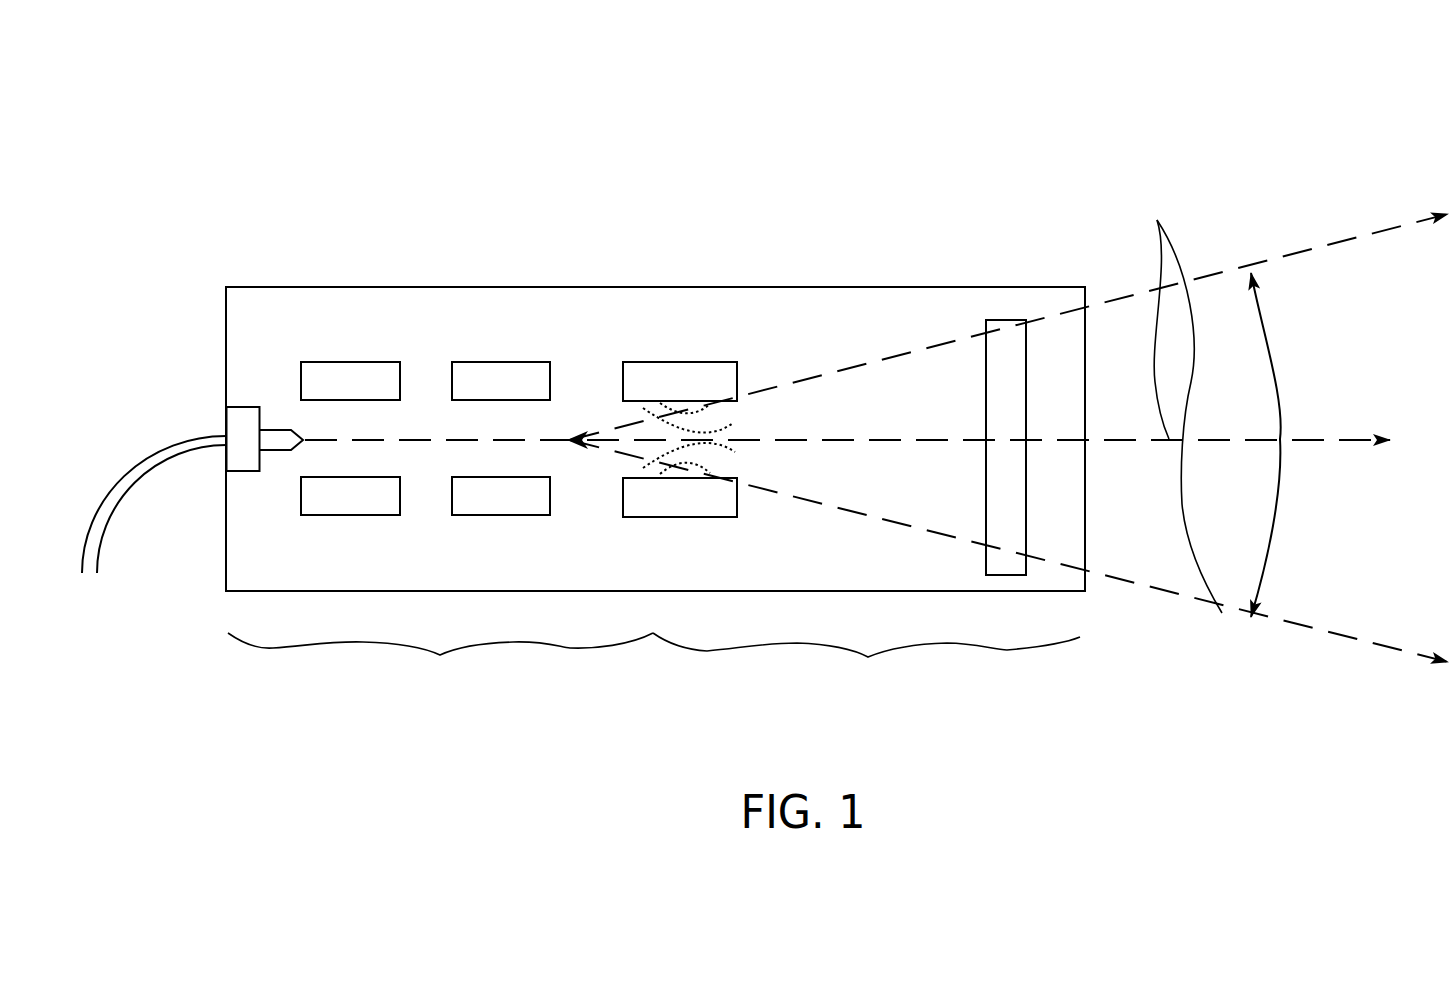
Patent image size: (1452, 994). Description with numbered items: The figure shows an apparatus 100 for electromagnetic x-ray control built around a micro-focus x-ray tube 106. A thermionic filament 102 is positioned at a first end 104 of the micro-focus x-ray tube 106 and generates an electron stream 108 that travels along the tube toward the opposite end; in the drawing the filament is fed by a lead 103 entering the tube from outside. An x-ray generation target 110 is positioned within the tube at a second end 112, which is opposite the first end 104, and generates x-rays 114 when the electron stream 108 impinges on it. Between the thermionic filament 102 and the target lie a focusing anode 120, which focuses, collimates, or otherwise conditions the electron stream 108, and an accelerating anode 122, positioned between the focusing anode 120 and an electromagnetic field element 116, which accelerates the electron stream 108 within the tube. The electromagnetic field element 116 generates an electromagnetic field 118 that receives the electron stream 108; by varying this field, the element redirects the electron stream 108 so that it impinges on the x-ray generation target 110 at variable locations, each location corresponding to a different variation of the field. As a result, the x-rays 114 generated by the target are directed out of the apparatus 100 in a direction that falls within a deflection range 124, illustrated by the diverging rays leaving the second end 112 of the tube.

The apparatus 100 is at (285, 95).
The thermionic filament 102 is at (280, 430).
The optical fiber input 103 is at (242, 407).
The first end 104 is at (440, 660).
The micro-focus x-ray tube 106 is at (578, 287).
The electron stream 108 is at (425, 437).
The x-ray generation target 110 is at (993, 320).
The second end 112 is at (866, 662).
The x-rays 114 is at (1135, 289).
The electromagnetic field element 116 is at (677, 362).
The electromagnetic field 118 is at (739, 414).
The focusing anode 120 is at (350, 362).
The accelerating anode 122 is at (500, 362).
The deflection range 124 is at (1264, 301).